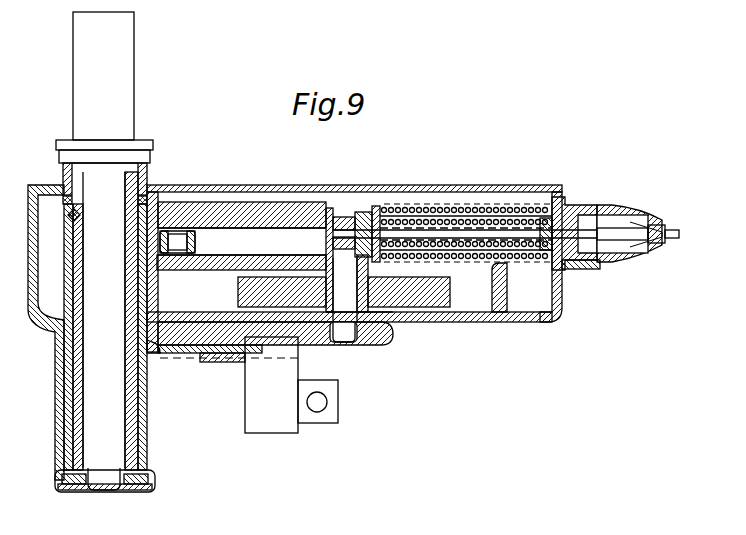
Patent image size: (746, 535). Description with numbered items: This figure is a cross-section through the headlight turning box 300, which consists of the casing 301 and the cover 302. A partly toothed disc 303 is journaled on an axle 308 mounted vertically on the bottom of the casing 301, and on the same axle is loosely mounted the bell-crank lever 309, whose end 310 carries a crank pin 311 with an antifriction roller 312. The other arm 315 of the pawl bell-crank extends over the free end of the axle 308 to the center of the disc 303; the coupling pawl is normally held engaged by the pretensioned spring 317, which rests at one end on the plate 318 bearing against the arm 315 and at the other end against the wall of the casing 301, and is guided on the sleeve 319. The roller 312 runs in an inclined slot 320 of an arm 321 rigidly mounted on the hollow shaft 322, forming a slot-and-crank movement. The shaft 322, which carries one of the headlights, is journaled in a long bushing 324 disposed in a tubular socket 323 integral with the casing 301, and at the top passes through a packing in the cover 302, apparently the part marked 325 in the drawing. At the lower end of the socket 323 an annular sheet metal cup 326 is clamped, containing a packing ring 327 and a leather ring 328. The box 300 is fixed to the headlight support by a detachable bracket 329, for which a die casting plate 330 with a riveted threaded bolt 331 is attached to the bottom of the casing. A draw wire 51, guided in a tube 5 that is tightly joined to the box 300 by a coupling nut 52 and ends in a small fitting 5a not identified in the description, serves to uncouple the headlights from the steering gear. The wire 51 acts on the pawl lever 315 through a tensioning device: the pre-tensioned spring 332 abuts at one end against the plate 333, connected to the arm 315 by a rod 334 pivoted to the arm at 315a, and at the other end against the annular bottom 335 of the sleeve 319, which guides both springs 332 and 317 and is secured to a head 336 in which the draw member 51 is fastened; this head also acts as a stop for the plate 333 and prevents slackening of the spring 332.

The tube 5 is at (667, 228).
The tip pin 5a is at (680, 236).
The draw wire 51 is at (620, 226).
The coupling nut 52 is at (604, 262).
The box 300 is at (545, 358).
The casing 301 is at (552, 321).
The cover 302 is at (469, 206).
The disc 303 is at (460, 318).
The axle 308 is at (352, 314).
The bell-crank lever 309 is at (323, 207).
The crank end 310 is at (252, 236).
The crank pin 311 is at (183, 236).
The antifriction roller 312 is at (164, 232).
The pawl lever arm 315 is at (360, 220).
The pivot point 315a is at (345, 218).
The pretensioned spring 317 is at (504, 236).
The plate 318 is at (378, 212).
The sleeve 319 is at (505, 212).
The slot 320 is at (290, 208).
The arm 321 is at (302, 260).
The hollow shaft 322 is at (125, 73).
The tubular socket 323 is at (150, 419).
The bushing 324 is at (160, 195).
The cover 325 is at (62, 181).
The sheet metal cup 326 is at (148, 492).
The packing ring 327 is at (152, 479).
The leather ring 328 is at (79, 484).
The bracket 329 is at (335, 360).
The die casting plate 330 is at (183, 345).
The threaded bolt 331 is at (223, 362).
The pre-tensioned spring 332 is at (557, 212).
The plate 333 is at (566, 266).
The rod 334 is at (470, 222).
The annular bottom 335 is at (413, 306).
The head 336 is at (636, 257).